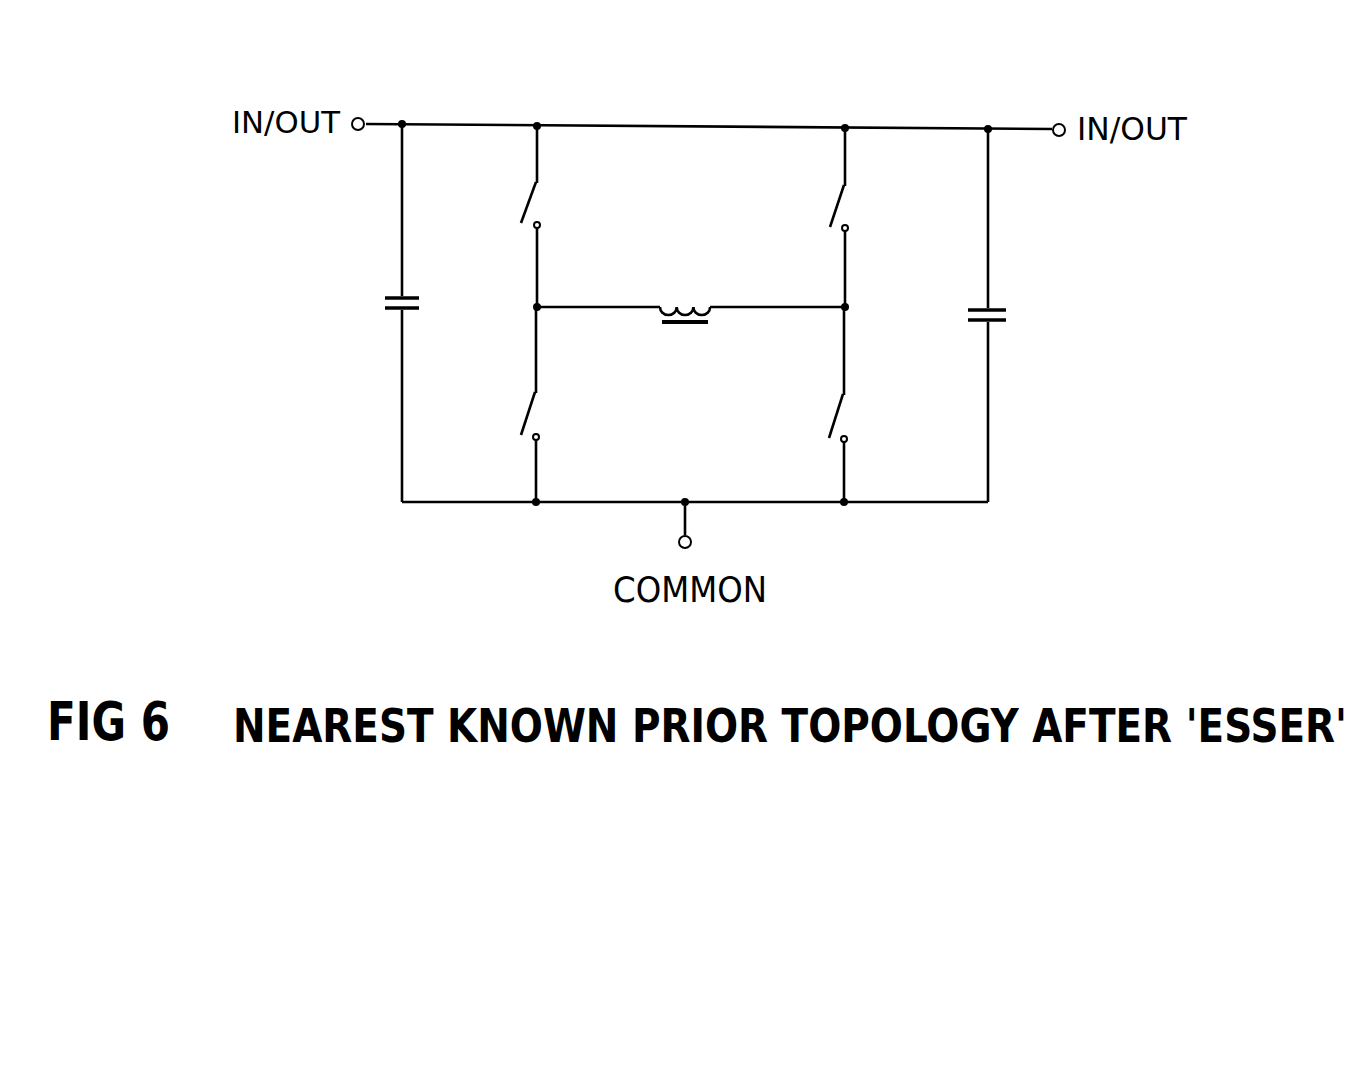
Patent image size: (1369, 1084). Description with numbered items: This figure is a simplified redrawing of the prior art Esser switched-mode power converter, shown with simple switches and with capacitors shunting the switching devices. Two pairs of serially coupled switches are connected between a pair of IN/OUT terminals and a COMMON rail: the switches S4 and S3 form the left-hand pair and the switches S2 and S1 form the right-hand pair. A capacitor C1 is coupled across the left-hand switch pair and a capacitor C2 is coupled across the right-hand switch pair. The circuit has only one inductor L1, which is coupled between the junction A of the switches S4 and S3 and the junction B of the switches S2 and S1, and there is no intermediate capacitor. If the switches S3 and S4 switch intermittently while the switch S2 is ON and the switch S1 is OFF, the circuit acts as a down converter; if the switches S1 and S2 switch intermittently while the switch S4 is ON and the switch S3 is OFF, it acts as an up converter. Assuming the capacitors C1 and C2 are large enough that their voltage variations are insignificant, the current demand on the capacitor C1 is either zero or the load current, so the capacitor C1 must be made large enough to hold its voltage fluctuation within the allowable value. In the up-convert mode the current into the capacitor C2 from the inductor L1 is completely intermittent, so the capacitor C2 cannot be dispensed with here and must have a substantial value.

The capacitor C1 is at (420, 280).
The capacitor C2 is at (1006, 292).
The inductor L1 is at (691, 287).
The switch S1 is at (863, 404).
The switch S2 is at (866, 217).
The switch S3 is at (555, 404).
The switch S4 is at (556, 216).
The node A is at (503, 266).
The node B is at (877, 266).